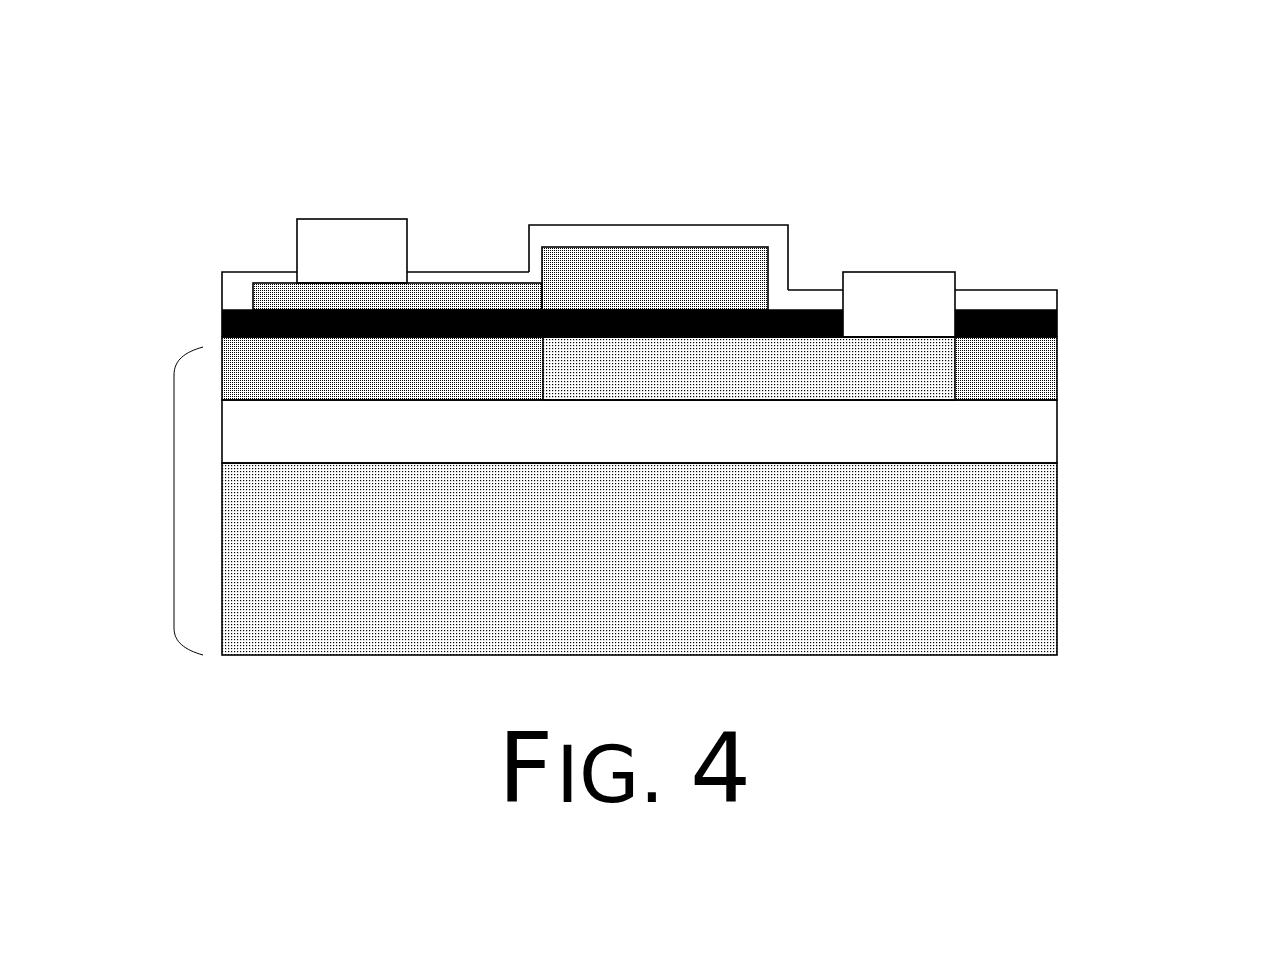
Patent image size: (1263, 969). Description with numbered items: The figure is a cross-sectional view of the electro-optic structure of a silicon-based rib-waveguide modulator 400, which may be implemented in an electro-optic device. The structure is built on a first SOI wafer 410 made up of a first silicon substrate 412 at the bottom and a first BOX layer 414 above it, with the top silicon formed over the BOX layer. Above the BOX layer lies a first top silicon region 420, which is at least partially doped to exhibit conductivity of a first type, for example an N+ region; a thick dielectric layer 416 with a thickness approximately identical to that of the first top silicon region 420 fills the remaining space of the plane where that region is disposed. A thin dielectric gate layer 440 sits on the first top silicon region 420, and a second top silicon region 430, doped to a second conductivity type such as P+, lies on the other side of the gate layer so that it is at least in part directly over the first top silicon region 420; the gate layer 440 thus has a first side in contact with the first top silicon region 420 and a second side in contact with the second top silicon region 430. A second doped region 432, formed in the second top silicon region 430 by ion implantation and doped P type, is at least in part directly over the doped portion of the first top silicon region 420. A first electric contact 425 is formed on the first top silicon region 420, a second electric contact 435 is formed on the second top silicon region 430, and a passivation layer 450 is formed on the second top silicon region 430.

The silicon-based rib-waveguide modulator 400 is at (538, 58).
The first SOI wafer 410 is at (174, 501).
The first silicon substrate 412 is at (960, 564).
The first BOX layer 414 is at (1000, 445).
The thick dielectric layer 416 is at (1020, 367).
The first top silicon region 420 is at (903, 383).
The first electric contact 425 is at (910, 303).
The second top silicon region 430 is at (252, 297).
The second doped region 432 is at (740, 283).
The second electric contact 435 is at (352, 248).
The thin dielectric gate layer 440 is at (1058, 315).
The passivation layer 450 is at (612, 225).